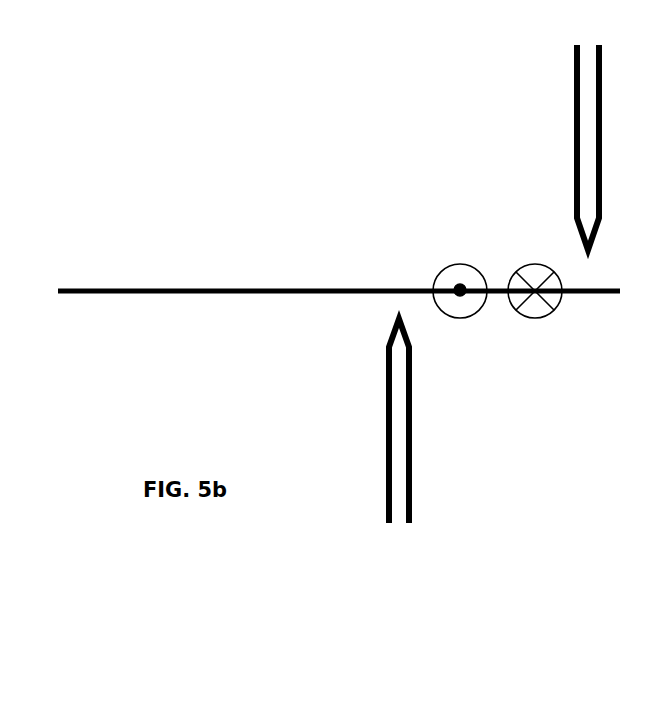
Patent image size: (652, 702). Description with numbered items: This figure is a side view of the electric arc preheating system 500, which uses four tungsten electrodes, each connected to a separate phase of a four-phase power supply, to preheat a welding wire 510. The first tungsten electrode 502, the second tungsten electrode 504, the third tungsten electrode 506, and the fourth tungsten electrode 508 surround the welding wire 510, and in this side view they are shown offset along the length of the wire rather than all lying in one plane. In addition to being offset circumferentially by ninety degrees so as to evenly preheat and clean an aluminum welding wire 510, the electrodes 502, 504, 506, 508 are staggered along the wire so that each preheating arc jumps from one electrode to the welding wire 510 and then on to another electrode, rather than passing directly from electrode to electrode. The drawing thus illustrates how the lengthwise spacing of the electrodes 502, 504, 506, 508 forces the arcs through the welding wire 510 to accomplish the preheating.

The preheating system 500 is at (280, 158).
The first tungsten electrode 502 is at (385, 415).
The second tungsten electrode 504 is at (460, 284).
The third tungsten electrode 506 is at (573, 138).
The fourth tungsten electrode 508 is at (543, 264).
The welding wire 510 is at (99, 294).